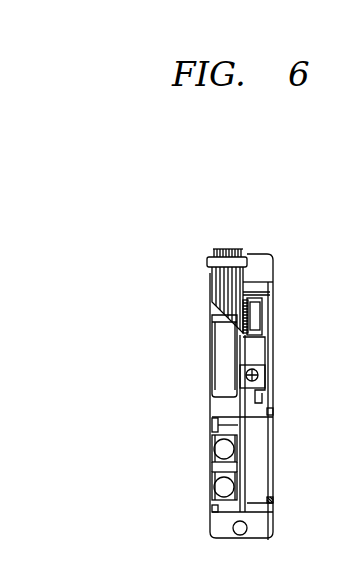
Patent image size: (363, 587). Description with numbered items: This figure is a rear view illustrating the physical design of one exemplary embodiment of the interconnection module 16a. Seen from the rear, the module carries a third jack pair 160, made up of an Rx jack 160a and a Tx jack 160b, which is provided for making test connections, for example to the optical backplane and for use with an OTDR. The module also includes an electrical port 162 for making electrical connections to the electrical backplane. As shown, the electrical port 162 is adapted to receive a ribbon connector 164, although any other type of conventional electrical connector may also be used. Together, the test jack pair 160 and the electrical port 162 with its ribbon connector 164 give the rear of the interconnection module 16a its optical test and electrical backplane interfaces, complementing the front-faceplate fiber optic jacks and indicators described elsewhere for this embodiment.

The interconnection module 16a is at (242, 222).
The ribbon connector 164 is at (210, 280).
The electrical port 162 is at (272, 318).
The third jack pair 160 is at (197, 438).
The Rx jack 160a is at (207, 438).
The Tx jack 160b is at (203, 502).